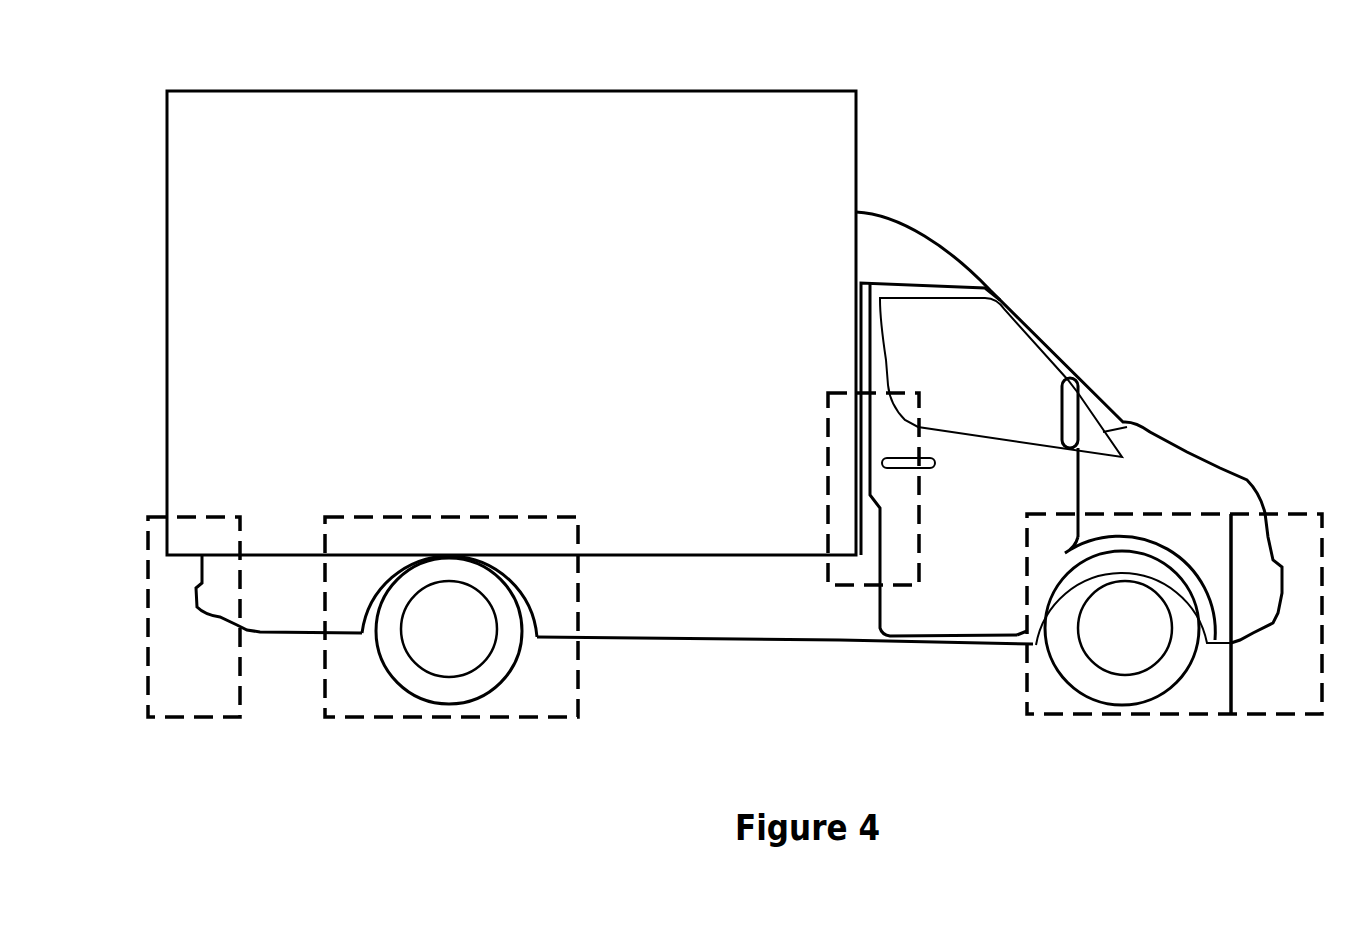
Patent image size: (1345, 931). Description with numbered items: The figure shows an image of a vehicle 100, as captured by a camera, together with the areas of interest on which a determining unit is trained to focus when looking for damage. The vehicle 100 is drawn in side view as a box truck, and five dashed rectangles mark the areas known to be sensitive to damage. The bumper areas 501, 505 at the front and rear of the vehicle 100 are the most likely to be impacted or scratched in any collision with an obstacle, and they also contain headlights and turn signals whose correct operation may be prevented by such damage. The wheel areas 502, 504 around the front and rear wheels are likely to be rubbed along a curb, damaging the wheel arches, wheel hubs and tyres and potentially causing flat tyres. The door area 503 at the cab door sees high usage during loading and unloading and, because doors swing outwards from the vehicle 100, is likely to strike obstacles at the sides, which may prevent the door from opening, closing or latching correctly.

The vehicle 100 is at (568, 95).
The bumper area 501 is at (1283, 713).
The wheel area 502 is at (1108, 713).
The door area 503 is at (866, 586).
The wheel area 504 is at (458, 718).
The bumper area 505 is at (195, 718).